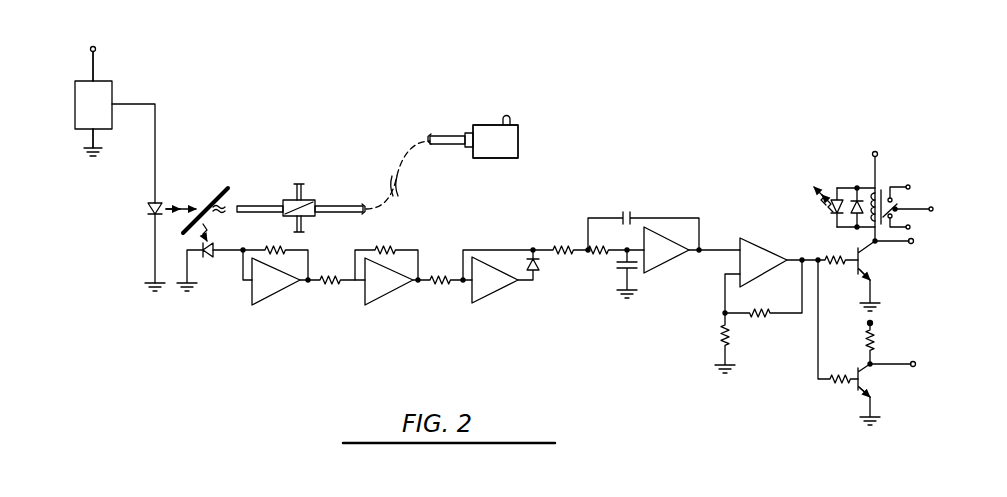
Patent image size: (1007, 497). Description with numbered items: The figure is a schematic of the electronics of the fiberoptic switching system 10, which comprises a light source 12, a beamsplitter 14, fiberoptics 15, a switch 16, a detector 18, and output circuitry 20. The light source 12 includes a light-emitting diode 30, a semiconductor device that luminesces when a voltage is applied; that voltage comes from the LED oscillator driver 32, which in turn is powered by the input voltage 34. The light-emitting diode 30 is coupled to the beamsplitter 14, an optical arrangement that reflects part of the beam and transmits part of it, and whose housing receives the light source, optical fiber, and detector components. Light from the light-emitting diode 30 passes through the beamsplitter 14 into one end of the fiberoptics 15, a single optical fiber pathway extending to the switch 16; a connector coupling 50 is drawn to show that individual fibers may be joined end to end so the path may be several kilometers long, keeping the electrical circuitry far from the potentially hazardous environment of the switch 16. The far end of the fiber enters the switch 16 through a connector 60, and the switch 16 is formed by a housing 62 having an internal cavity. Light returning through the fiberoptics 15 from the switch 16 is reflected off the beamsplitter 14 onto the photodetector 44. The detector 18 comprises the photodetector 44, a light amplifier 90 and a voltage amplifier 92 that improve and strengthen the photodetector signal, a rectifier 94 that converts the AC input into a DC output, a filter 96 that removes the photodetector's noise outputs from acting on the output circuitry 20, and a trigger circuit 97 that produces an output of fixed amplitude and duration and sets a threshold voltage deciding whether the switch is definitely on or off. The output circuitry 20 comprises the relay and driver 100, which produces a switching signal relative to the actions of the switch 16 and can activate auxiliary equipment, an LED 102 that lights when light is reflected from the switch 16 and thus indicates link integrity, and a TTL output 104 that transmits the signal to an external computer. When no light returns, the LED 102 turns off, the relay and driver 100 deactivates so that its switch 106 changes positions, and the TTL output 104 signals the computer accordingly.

The fiberoptic switching system 10 is at (262, 124).
The light source 12 is at (96, 165).
The beamsplitter 14 is at (206, 197).
The fiberoptics 15 is at (410, 185).
The switch 16 is at (498, 104).
The detector 18 is at (237, 302).
The output circuitry 20 is at (894, 248).
The light-emitting diode 30 is at (146, 210).
The LED oscillator driver 32 is at (114, 92).
The input voltage 34 is at (98, 68).
The photodetector 44 is at (210, 261).
The connector coupling 50 is at (315, 191).
The connector 60 is at (468, 123).
The housing 62 is at (521, 131).
The light amplifier 90 is at (272, 302).
The voltage amplifier 92 is at (382, 302).
The rectifier 94 is at (489, 302).
The filter 96 is at (672, 264).
The trigger circuit 97 is at (766, 239).
The relay and driver 100 is at (884, 182).
The LED 102 is at (829, 196).
The TTL output 104 is at (891, 372).
The switch 106 is at (907, 202).